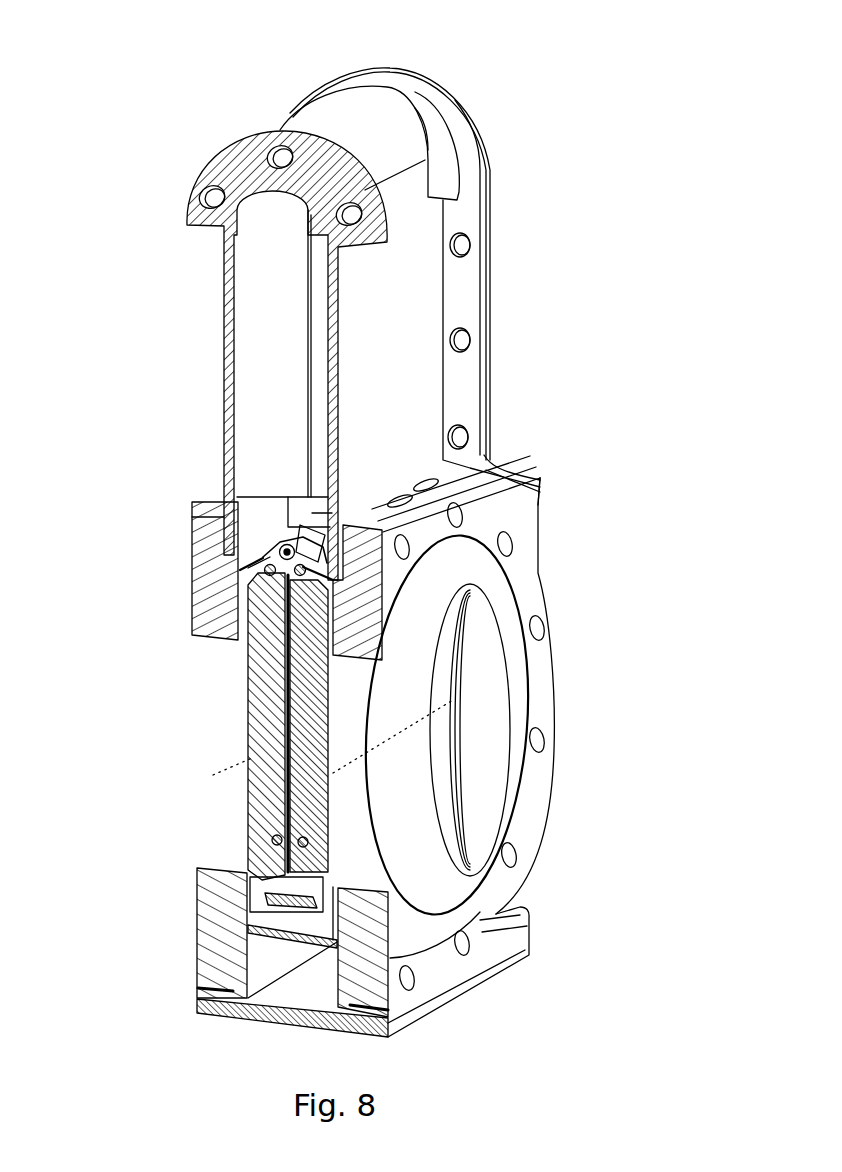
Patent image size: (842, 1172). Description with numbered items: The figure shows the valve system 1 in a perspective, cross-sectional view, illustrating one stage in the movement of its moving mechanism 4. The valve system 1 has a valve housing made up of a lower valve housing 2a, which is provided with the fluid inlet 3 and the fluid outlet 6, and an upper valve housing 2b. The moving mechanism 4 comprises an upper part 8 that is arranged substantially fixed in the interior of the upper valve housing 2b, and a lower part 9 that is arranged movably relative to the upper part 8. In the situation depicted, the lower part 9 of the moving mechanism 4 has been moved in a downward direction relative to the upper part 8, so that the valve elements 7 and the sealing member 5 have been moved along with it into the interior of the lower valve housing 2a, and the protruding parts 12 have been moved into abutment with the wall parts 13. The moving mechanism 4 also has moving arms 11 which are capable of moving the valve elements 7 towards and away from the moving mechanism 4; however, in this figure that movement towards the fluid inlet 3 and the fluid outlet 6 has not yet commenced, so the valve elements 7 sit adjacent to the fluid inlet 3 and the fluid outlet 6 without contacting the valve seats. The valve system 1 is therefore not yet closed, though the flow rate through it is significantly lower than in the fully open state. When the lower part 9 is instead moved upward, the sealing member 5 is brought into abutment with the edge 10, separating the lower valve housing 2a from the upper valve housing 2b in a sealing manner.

The valve system 1 is at (682, 112).
The lower valve housing 2a is at (523, 612).
The upper valve housing 2b is at (470, 342).
The fluid inlet 3 is at (218, 782).
The moving mechanism 4 is at (290, 262).
The sealing member 5 is at (295, 933).
The fluid outlet 6 is at (432, 768).
The valve elements 7 is at (258, 740).
The upper part 8 is at (318, 338).
The lower part 9 is at (268, 893).
The edge 10 is at (313, 593).
The moving arms 11 is at (284, 548).
The protruding parts 12 is at (240, 560).
The wall parts 13 is at (283, 542).